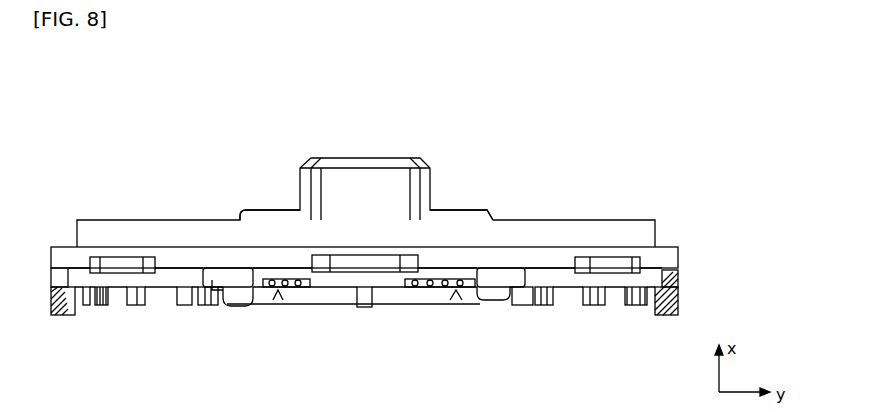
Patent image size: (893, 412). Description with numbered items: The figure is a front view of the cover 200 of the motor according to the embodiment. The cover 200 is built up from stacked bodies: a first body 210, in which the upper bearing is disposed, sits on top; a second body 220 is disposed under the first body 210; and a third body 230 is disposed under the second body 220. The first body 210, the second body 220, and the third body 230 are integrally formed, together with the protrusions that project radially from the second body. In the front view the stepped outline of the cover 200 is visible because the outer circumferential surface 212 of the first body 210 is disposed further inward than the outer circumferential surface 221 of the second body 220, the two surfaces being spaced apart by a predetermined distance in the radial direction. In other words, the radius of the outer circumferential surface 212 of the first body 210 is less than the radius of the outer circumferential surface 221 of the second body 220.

The cover 200 is at (80, 101).
The first body 210 is at (598, 238).
The outer circumferential surface of the first body 212 is at (664, 219).
The second body 220 is at (668, 258).
The outer circumferential surface of the second body 221 is at (683, 250).
The third body 230 is at (676, 281).